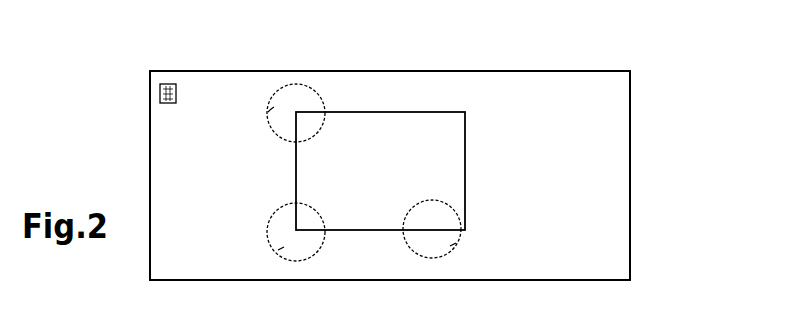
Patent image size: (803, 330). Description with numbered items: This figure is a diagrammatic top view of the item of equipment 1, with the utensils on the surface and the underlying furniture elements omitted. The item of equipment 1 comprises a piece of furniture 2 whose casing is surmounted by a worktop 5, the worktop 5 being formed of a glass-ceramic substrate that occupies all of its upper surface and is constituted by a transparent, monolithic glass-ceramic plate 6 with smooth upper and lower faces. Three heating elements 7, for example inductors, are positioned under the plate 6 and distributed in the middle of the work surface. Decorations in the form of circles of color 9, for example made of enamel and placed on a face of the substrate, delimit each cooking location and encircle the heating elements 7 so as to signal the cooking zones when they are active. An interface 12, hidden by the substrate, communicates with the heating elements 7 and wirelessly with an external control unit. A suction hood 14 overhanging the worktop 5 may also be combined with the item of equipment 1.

The item of equipment 1 is at (676, 113).
The piece of furniture 2 is at (577, 71).
The worktop 5 is at (427, 82).
The glass-ceramic plate 6 is at (630, 201).
The heating elements 7 is at (268, 112).
The circles of color 9 is at (298, 92).
The interface 12 is at (158, 90).
The suction hood 14 is at (450, 137).